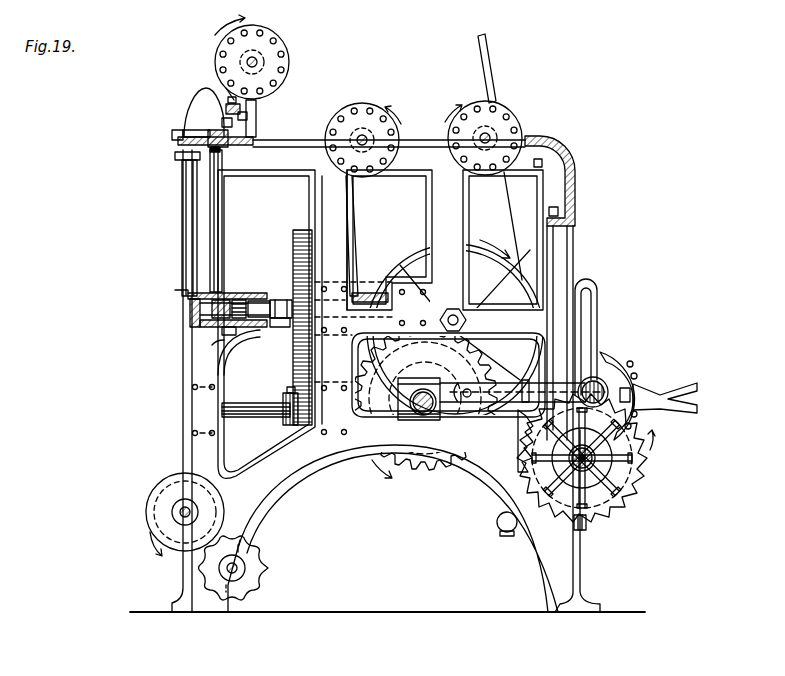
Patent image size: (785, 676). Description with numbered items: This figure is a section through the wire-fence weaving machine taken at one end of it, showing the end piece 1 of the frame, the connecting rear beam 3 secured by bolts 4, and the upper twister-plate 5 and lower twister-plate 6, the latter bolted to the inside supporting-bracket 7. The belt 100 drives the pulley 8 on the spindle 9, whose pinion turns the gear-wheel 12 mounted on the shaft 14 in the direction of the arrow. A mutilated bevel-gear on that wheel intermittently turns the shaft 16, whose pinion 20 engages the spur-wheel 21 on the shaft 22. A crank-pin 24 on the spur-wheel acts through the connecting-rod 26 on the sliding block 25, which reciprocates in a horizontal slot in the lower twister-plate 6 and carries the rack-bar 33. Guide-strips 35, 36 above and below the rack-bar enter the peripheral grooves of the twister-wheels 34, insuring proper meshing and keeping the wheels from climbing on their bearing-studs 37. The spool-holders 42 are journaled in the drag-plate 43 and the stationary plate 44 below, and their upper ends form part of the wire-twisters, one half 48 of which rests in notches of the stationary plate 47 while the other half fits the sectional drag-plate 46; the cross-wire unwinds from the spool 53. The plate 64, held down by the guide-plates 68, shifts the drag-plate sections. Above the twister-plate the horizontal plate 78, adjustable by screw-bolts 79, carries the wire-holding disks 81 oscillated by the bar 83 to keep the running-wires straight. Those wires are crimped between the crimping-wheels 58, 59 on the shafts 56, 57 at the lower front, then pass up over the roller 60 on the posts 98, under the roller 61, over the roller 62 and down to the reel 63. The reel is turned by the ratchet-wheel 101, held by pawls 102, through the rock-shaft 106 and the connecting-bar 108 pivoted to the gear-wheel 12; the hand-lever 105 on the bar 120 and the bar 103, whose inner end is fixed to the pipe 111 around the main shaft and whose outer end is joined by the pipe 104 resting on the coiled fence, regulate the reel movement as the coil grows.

The end piece 1 is at (562, 258).
The connecting rear beam 3 is at (566, 168).
The bolts 4 is at (560, 212).
The upper twister-plate 5 is at (256, 145).
The lower twister-plate 6 is at (198, 312).
The inside supporting-bracket 7 is at (242, 340).
The driving-pulley 8 is at (412, 253).
The spindle 9 is at (467, 320).
The gear-wheel 12 is at (428, 466).
The shaft 14 is at (428, 420).
The shaft 16 is at (253, 418).
The pinion 20 is at (290, 398).
The spur-wheel 21 is at (293, 241).
The shaft 22 is at (372, 294).
The crank-pin 24 is at (290, 300).
The sliding block 25 is at (277, 309).
The connecting-rod 26 is at (281, 328).
The rack-bar 33 is at (228, 301).
The twister-wheels 34 is at (210, 328).
The guide-strip 35 is at (243, 297).
The guide-strip 36 is at (234, 329).
The bearing-studs 37 is at (213, 347).
The spool-holders 42 is at (218, 224).
The drag-plate 43 is at (252, 300).
The stationary plate 44 is at (186, 296).
The drag-plate 46 is at (202, 136).
The stationary plate 47 is at (256, 110).
The wire-twister half 48 is at (223, 148).
The spool 53 is at (187, 222).
The shaft 56 is at (191, 516).
The shaft 57 is at (222, 570).
The crimping-wheels 58 is at (146, 515).
The crimping-wheels 59 is at (268, 572).
The roller 60 is at (279, 42).
The roller 61 is at (368, 104).
The roller 62 is at (503, 114).
The reel 63 is at (619, 493).
The plate 64 is at (205, 90).
The guide-plates 68 is at (176, 132).
The horizontal plate 78 is at (247, 118).
The screw-bolts 79 is at (228, 122).
The wire-holding disks 81 is at (226, 108).
The bar 83 is at (229, 98).
The brackets or posts 98 is at (226, 88).
The belt 100 is at (486, 68).
The ratchet-wheel 101 is at (648, 463).
The pawls 102 is at (585, 526).
The bar 103 is at (522, 396).
The pipe 104 is at (601, 360).
The hand-lever 105 is at (657, 393).
The rock-shaft 106 is at (592, 303).
The connecting-bar 108 is at (526, 380).
The pipe 111 is at (424, 392).
The bar 120 is at (519, 420).